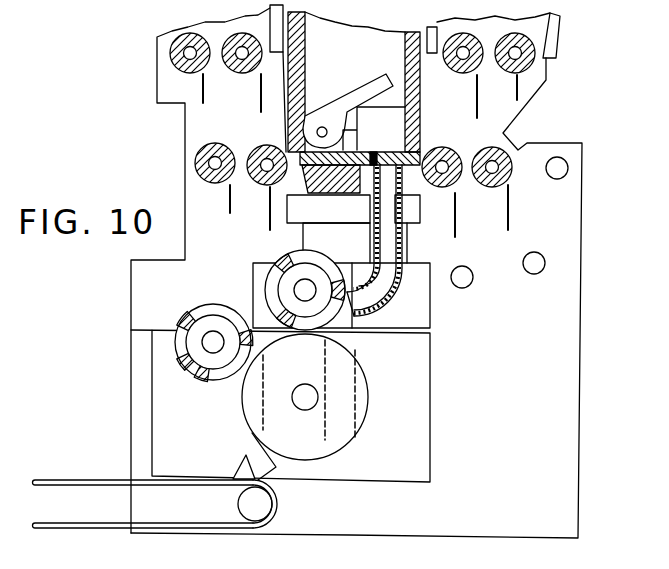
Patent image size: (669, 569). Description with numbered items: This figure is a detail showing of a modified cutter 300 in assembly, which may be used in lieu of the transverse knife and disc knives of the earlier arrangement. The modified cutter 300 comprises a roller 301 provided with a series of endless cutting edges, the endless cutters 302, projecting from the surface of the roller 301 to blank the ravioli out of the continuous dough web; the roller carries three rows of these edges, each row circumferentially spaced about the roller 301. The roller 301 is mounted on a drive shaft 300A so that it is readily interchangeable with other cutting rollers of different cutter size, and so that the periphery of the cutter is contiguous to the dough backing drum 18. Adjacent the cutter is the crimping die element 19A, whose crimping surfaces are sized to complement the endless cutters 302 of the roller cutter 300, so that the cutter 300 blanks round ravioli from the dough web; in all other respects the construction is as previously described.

The dough backing drum 18 is at (367, 408).
The guide roller 19A is at (338, 314).
The modified cutter 300 is at (170, 346).
The drive shaft 300A is at (210, 338).
The roller 301 is at (177, 357).
The endless cutters 302 is at (246, 428).